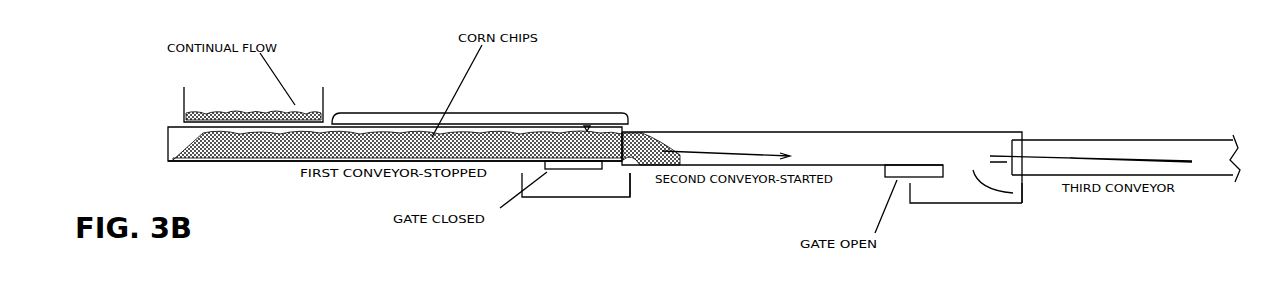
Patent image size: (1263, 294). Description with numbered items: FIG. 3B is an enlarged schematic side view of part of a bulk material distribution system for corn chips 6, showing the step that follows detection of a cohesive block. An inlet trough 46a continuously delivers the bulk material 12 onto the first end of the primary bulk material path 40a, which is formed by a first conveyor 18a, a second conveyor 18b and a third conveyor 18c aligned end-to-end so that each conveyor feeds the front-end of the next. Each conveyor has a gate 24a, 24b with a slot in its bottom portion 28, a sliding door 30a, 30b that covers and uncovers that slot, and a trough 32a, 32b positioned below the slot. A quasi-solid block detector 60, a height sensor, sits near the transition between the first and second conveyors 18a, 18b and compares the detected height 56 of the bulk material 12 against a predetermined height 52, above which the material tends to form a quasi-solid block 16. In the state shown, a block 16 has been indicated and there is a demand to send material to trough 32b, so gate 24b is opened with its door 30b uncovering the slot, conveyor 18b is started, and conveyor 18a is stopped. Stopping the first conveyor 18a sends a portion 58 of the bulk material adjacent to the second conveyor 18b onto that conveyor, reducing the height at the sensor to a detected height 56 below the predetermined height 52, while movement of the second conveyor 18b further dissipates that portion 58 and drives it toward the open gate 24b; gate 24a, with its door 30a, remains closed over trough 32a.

The corn chips 6 is at (470, 112).
The bulk material 12 is at (213, 110).
The quasi-solid block 16 is at (393, 140).
The first conveyor 18a is at (490, 121).
The second conveyor 18b is at (833, 132).
The third conveyor 18c is at (1178, 140).
The gate 24a is at (613, 167).
The gate 24b is at (1022, 185).
The bottom portion 28 is at (203, 162).
The sliding door 30a is at (568, 172).
The sliding door 30b is at (928, 180).
The trough 32a is at (597, 197).
The trough 32b is at (910, 183).
The primary bulk material path 40a is at (757, 150).
The inlet trough 46a is at (183, 97).
The predetermined height 52 is at (598, 140).
The detected height 56 is at (563, 133).
The pile of chips transferring 58 is at (660, 143).
The quasi-solid block detector 60 is at (336, 130).